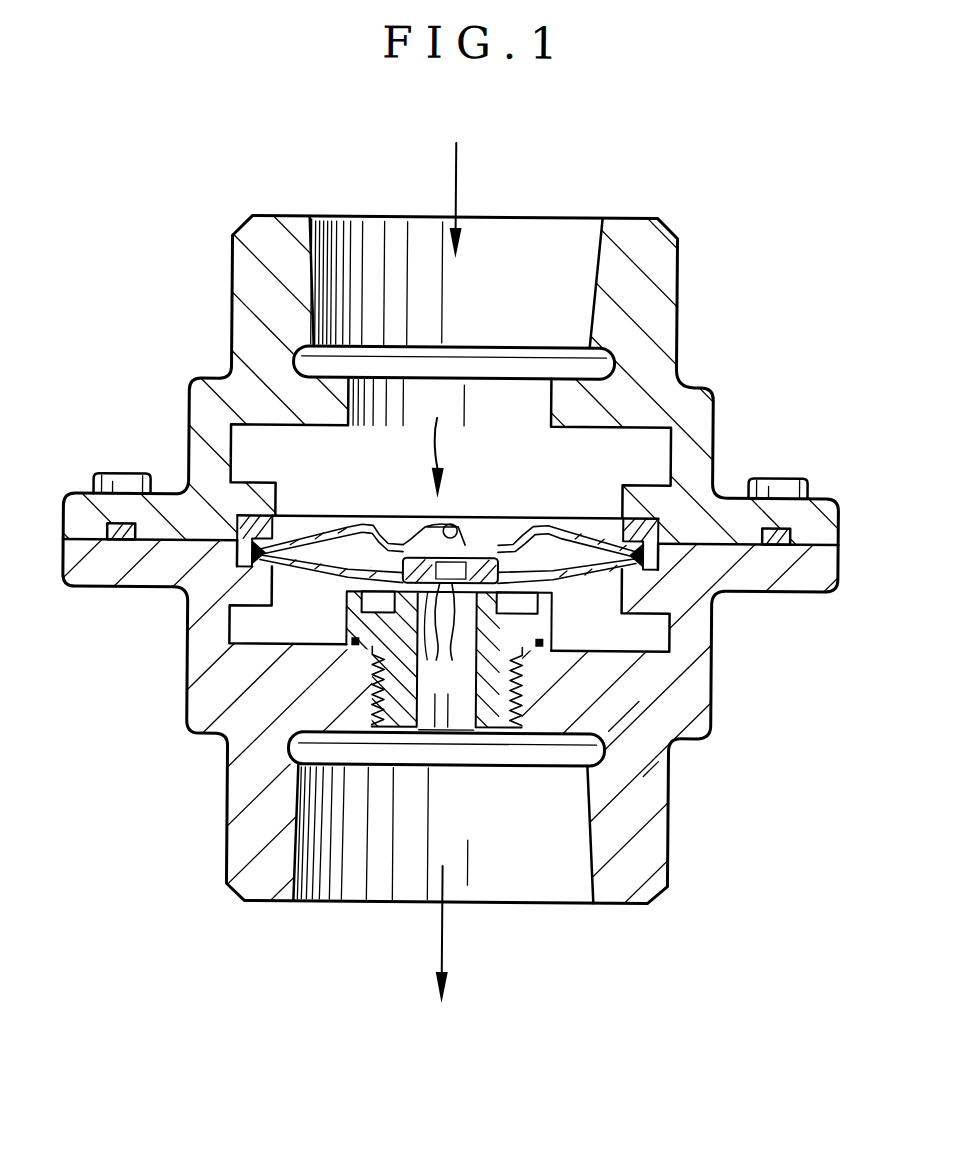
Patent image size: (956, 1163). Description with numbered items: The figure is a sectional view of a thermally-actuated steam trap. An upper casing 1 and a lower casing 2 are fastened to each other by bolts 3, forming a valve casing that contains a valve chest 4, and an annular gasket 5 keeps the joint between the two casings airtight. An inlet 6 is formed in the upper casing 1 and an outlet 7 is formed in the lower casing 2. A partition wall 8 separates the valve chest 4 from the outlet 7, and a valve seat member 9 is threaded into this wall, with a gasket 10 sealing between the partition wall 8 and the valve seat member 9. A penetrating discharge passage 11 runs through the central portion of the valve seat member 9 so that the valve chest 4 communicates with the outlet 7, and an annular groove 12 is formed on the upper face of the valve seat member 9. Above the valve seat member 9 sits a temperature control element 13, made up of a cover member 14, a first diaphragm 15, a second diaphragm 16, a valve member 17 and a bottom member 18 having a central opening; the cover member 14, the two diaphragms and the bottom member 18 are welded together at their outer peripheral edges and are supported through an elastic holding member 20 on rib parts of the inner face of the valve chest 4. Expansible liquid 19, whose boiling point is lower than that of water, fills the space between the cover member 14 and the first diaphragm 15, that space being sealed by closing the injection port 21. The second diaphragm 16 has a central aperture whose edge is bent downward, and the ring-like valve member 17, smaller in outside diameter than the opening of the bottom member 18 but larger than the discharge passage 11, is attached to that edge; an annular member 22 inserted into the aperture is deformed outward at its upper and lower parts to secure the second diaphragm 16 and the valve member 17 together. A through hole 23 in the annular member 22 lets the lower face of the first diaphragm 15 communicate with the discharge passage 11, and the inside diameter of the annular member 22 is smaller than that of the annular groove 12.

The upper casing 1 is at (660, 263).
The lower casing 2 is at (647, 840).
The bolts 3 is at (121, 478).
The valve chest 4 is at (613, 440).
The annular gasket 5 is at (122, 545).
The inlet 6 is at (520, 250).
The outlet 7 is at (360, 875).
The partition wall 8 is at (647, 695).
The valve seat member 9 is at (495, 717).
The gasket 10 is at (538, 648).
The discharge passage 11 is at (445, 710).
The annular groove 12 is at (363, 603).
The temperature control element 13 is at (437, 573).
The cover member 14 is at (565, 542).
The first diaphragm 15 is at (507, 553).
The second diaphragm 16 is at (553, 577).
The valve member 17 is at (413, 557).
The bottom member 18 is at (330, 570).
The expansible liquid 19 is at (377, 542).
The elastic holding member 20 is at (645, 527).
The injection port 21 is at (450, 530).
The annular member 22 is at (462, 588).
The through hole 23 is at (442, 659).